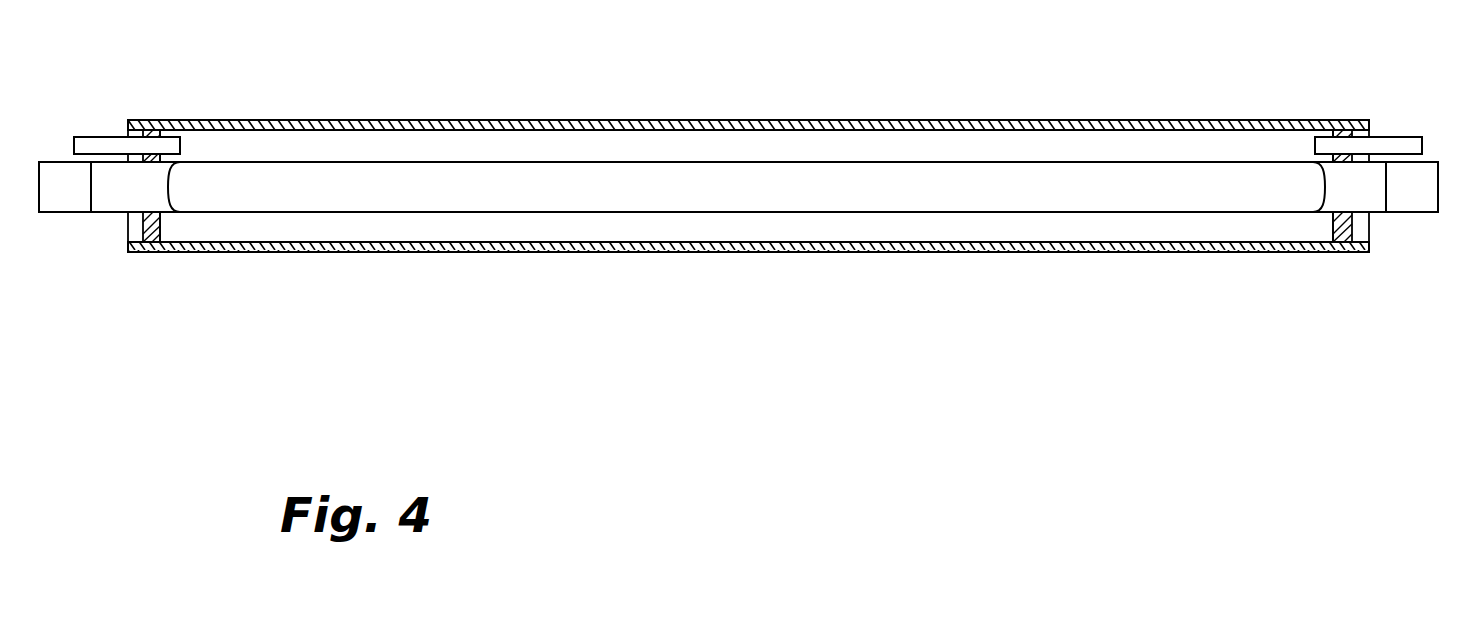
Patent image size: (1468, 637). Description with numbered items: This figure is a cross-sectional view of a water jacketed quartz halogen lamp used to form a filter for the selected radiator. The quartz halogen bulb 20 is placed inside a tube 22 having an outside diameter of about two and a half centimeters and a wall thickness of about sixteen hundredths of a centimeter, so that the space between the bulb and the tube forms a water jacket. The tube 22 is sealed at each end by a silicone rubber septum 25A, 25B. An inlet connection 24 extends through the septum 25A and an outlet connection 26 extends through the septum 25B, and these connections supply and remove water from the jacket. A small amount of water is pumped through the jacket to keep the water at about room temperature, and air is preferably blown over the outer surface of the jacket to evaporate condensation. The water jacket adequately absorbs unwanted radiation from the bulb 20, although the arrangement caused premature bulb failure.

The quartz halogen bulb 20 is at (558, 187).
The tube 22 is at (668, 127).
The inlet connection 24 is at (92, 135).
The silicone rubber septum 25A is at (143, 222).
The silicone rubber septum 25B is at (1352, 223).
The outlet connection 26 is at (1397, 137).